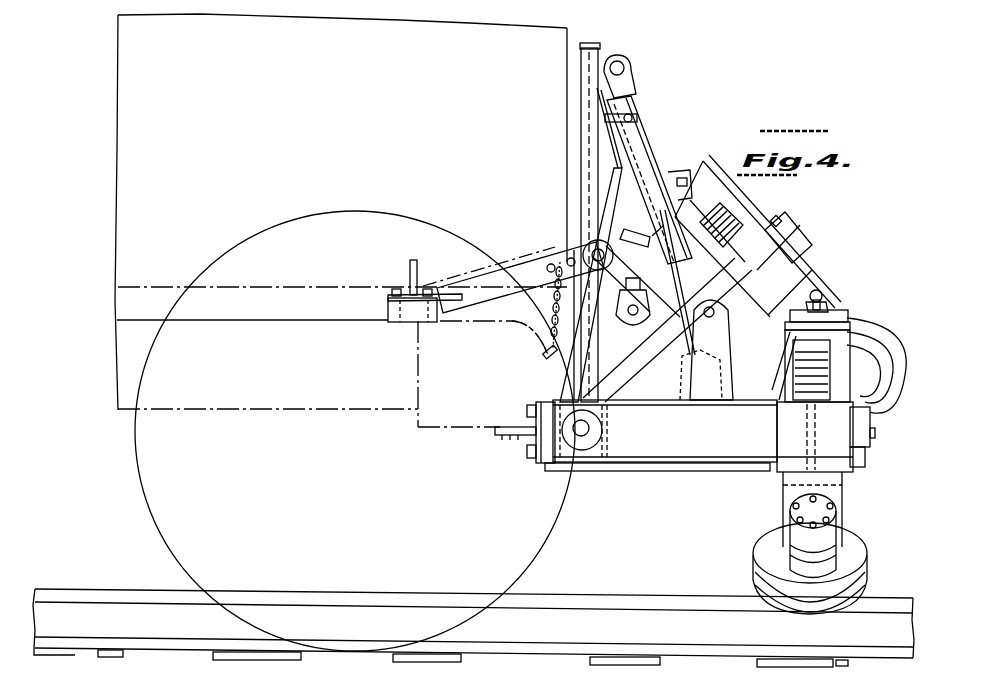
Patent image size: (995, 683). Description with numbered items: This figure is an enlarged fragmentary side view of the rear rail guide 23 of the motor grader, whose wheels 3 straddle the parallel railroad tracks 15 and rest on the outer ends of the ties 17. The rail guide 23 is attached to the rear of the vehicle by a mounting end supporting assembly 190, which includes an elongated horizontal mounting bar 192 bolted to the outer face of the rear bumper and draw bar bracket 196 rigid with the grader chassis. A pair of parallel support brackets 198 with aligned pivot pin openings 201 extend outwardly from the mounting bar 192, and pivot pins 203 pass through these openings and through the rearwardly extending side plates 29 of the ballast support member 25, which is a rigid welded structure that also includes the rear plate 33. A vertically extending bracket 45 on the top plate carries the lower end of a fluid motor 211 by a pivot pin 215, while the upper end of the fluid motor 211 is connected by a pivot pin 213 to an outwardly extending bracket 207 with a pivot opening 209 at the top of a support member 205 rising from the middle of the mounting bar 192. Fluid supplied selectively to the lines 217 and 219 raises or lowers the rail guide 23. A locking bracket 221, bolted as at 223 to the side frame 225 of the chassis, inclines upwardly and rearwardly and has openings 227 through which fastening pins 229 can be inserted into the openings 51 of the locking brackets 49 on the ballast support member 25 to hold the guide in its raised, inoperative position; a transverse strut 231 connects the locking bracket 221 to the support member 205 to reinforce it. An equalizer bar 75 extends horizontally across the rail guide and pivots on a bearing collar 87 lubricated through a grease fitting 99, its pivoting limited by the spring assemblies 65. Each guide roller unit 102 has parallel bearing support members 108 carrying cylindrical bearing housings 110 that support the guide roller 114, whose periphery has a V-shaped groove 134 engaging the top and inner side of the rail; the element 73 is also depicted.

The wheels 3 is at (220, 248).
The railroad tracks 15 is at (598, 598).
The ties 17 is at (212, 659).
The rail guide 23 is at (748, 194).
The ballast support member 25 is at (686, 474).
The side plates 29 is at (665, 431).
The rear plate 33 is at (657, 384).
The bracket 45 is at (672, 338).
The locking brackets 49 is at (684, 344).
The openings 51 is at (711, 350).
The spring assemblies 65 is at (726, 190).
The nut 73 is at (826, 298).
The equalizer bar 75 is at (860, 488).
The bearing collar 87 is at (866, 452).
The grease fitting 99 is at (806, 230).
The guide roller unit 102 is at (838, 522).
The bearing support members 108 is at (784, 488).
The bearing housing 110 is at (790, 535).
The guide roller 114 is at (875, 560).
The V-shaped groove 134 is at (760, 582).
The mounting end supporting assembly 190 is at (712, 474).
The mounting bar 192 is at (586, 466).
The rear bumper and draw bar bracket 196 is at (536, 466).
The support brackets 198 is at (612, 470).
The pivot pin openings 201 is at (600, 433).
The pivot pins 203 is at (632, 392).
The support member 205 is at (590, 140).
The bracket 207 is at (606, 50).
The pivot opening 209 is at (630, 70).
The fluid motor 211 is at (643, 140).
The pivot pin 213 is at (626, 60).
The pivot pin 215 is at (686, 421).
The line 217 is at (636, 114).
The line 219 is at (634, 236).
The locking bracket 221 is at (530, 266).
The bolts 223 is at (398, 294).
The side frame 225 is at (225, 402).
The openings 227 is at (566, 258).
The fastening pins 229 is at (537, 355).
The strut 231 is at (548, 272).